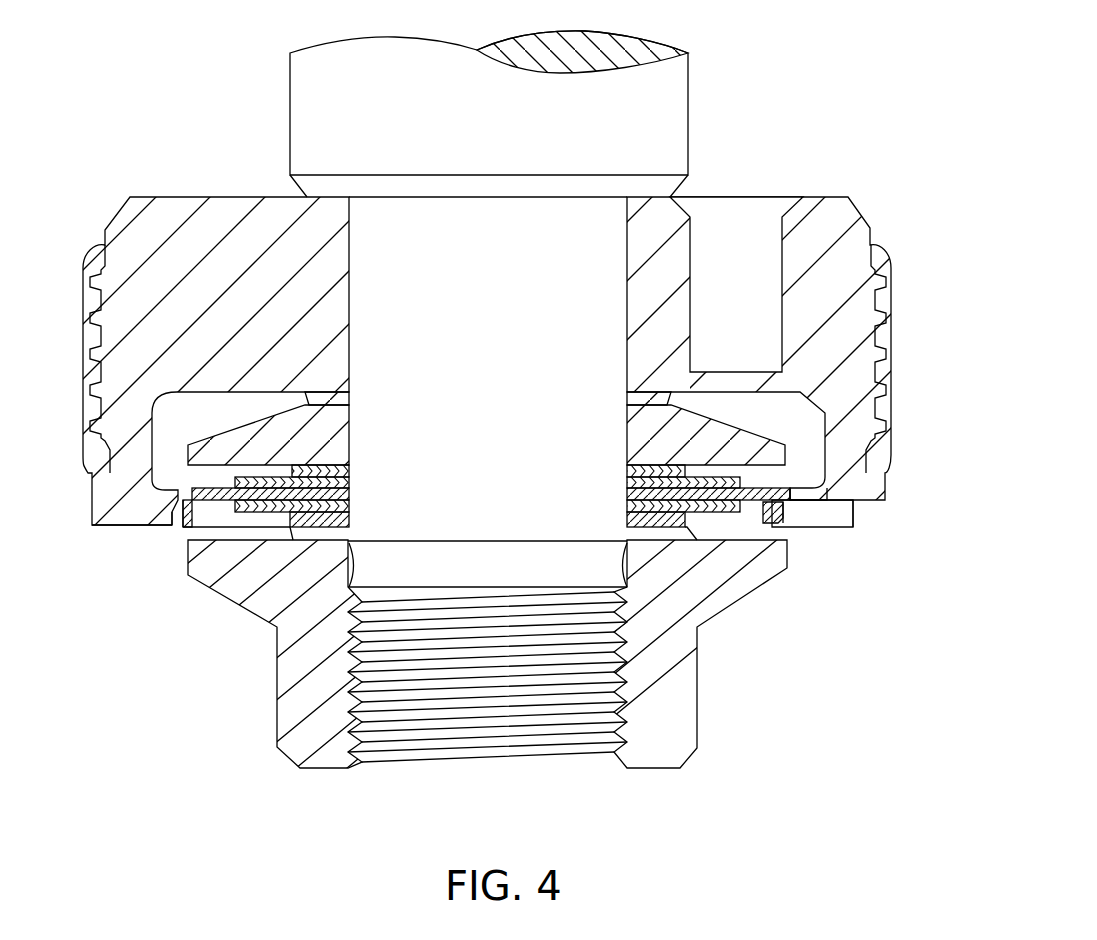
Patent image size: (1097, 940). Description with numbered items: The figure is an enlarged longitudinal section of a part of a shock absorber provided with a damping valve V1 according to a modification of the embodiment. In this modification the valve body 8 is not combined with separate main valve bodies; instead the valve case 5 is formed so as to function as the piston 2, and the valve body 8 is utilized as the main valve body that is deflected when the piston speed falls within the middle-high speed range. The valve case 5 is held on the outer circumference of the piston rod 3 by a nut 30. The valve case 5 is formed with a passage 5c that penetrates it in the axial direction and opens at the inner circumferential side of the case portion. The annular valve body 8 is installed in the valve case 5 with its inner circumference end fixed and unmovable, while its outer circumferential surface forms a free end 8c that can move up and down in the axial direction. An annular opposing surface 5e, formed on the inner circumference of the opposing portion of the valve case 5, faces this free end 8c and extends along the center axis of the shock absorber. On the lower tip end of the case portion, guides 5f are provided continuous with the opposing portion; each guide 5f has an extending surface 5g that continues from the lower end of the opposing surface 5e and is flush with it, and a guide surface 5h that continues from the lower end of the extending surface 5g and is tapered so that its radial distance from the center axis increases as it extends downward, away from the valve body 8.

The damping valve V1 is at (135, 150).
The piston 2 is at (860, 194).
The piston rod 3 is at (690, 97).
The valve case 5 is at (548, 470).
The passage 5c is at (752, 325).
The opposing surface 5e is at (790, 488).
The guides 5f is at (110, 528).
The extending surface 5g is at (762, 508).
The guide surface 5h is at (175, 514).
The valve body 8 is at (523, 557).
The free end 8c is at (771, 515).
The nut 30 is at (277, 712).